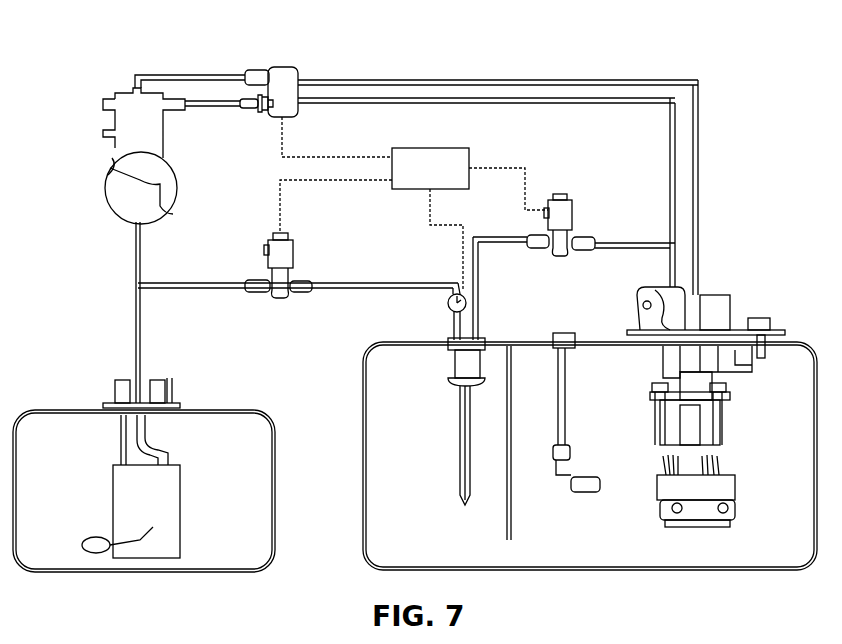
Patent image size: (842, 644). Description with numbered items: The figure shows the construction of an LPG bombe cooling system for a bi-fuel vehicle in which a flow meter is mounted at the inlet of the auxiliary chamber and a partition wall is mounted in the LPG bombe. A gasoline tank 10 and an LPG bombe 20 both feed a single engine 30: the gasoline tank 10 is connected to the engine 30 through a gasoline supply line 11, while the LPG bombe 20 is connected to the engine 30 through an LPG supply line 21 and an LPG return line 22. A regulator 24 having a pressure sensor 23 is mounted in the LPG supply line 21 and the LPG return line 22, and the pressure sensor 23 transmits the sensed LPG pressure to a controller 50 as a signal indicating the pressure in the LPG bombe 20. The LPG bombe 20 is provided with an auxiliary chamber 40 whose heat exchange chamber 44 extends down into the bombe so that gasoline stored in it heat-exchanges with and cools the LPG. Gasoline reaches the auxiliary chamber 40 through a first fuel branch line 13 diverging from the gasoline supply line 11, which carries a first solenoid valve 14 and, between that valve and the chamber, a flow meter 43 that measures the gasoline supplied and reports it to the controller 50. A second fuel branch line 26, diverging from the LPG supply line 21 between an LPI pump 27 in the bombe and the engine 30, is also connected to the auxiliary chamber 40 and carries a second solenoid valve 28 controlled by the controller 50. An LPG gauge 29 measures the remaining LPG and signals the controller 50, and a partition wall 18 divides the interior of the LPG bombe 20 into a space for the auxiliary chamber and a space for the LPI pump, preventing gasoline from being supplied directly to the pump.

The gasoline tank 10 is at (62, 408).
The gasoline supply line 11 is at (136, 358).
The first fuel branch line 13 is at (190, 280).
The first solenoid valve 14 is at (295, 254).
The partition wall 18 is at (511, 500).
The LPG bombe 20 is at (526, 340).
The LPG supply line 21 is at (670, 165).
The LPG return line 22 is at (698, 186).
The pressure sensor 23 is at (260, 112).
The regulator 24 is at (292, 66).
The second fuel branch line 26 is at (614, 243).
The LPI pump 27 is at (658, 486).
The second solenoid valve 28 is at (560, 200).
The LPG gauge 29 is at (568, 400).
The engine 30 is at (104, 200).
The auxiliary chamber 40 is at (452, 363).
The flow meter 43 is at (448, 303).
The heat exchange chamber 44 is at (460, 445).
The controller 50 is at (411, 190).